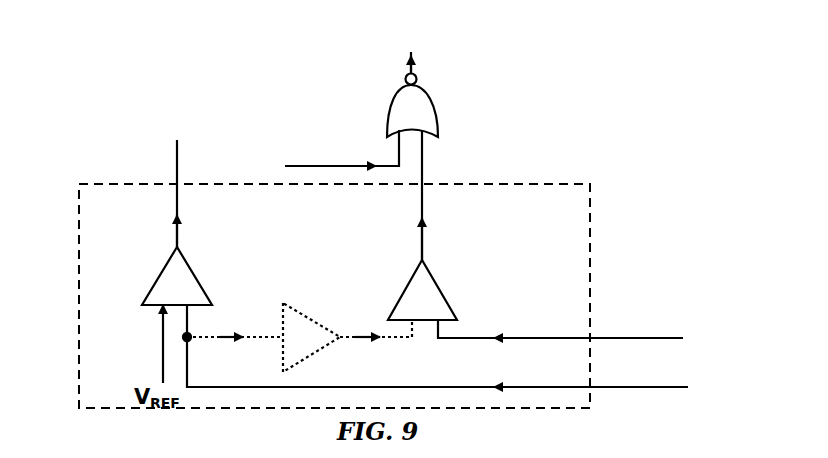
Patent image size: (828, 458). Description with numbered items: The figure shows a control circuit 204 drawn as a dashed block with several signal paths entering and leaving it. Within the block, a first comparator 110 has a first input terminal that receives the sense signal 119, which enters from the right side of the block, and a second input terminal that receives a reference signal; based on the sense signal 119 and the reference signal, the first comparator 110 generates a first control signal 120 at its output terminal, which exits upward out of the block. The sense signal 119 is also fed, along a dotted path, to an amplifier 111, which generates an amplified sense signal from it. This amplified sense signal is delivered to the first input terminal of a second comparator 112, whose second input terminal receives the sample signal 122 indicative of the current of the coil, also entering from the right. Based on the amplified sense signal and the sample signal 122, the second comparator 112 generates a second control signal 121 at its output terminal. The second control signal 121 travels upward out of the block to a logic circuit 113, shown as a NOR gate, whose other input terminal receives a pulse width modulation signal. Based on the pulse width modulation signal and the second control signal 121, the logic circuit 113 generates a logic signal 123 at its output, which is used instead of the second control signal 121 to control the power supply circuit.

The control circuit 204 is at (120, 178).
The first comparator 110 is at (144, 287).
The amplifier 111 is at (302, 306).
The second comparator 112 is at (398, 288).
The logic circuit 113 is at (426, 92).
The sense signal 119 is at (436, 346).
The first control signal 120 is at (200, 193).
The second control signal 121 is at (446, 195).
The sample signal 122 is at (560, 323).
The logic signal 123 is at (415, 49).